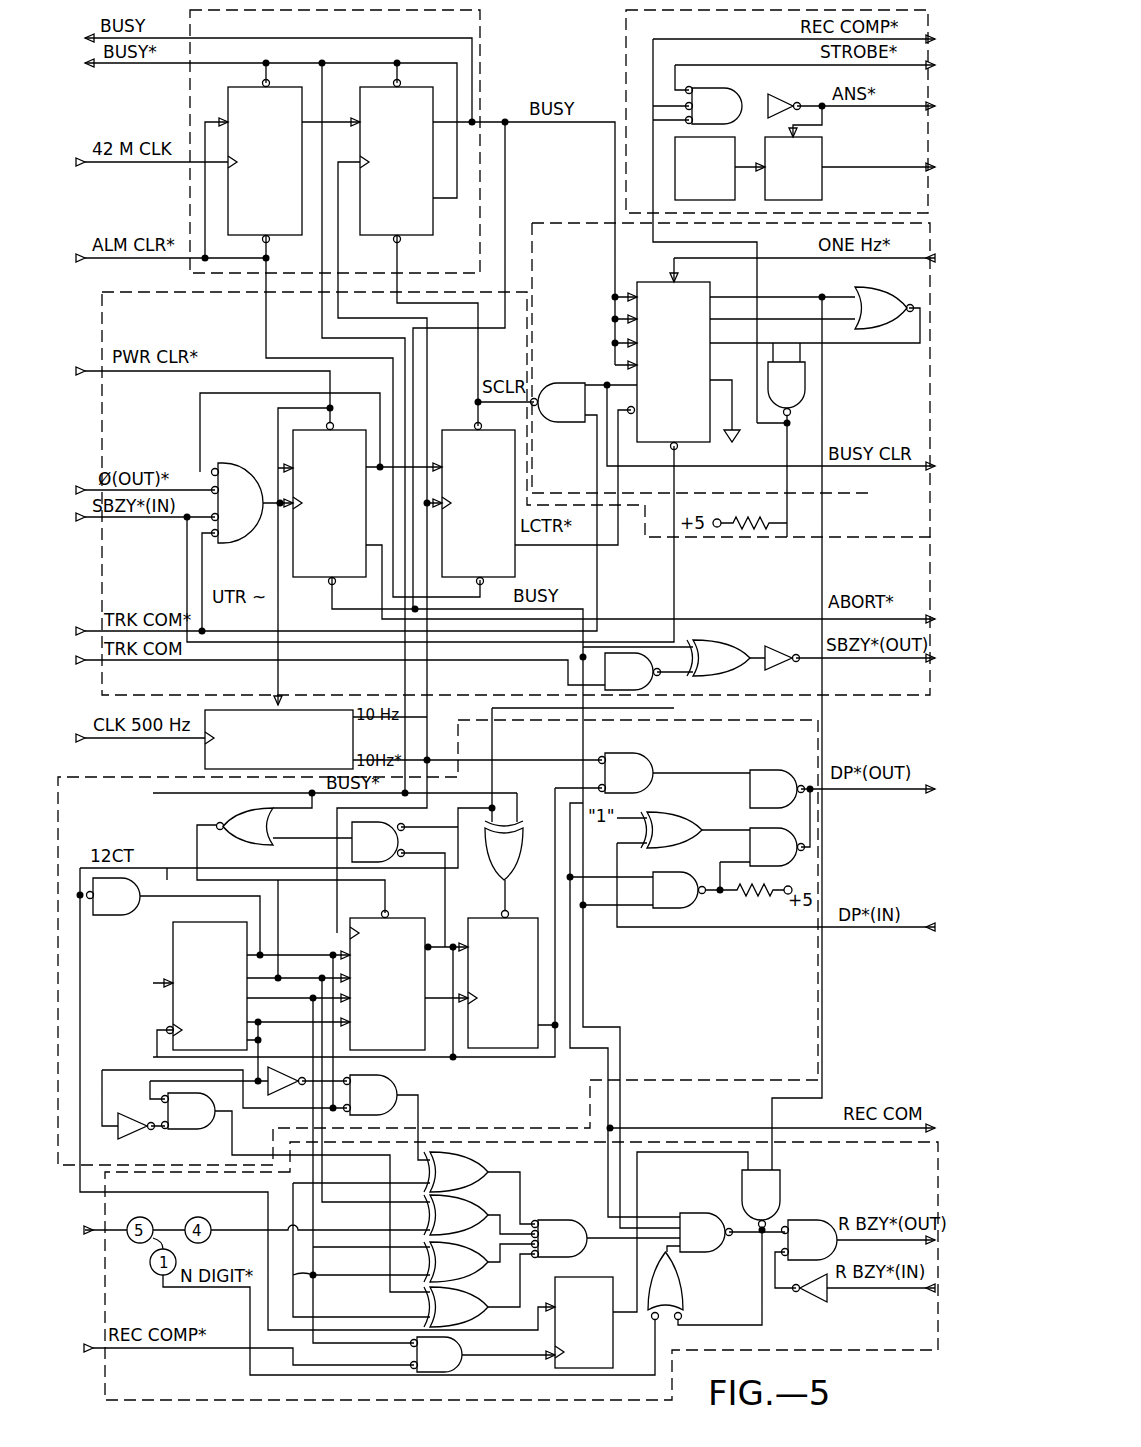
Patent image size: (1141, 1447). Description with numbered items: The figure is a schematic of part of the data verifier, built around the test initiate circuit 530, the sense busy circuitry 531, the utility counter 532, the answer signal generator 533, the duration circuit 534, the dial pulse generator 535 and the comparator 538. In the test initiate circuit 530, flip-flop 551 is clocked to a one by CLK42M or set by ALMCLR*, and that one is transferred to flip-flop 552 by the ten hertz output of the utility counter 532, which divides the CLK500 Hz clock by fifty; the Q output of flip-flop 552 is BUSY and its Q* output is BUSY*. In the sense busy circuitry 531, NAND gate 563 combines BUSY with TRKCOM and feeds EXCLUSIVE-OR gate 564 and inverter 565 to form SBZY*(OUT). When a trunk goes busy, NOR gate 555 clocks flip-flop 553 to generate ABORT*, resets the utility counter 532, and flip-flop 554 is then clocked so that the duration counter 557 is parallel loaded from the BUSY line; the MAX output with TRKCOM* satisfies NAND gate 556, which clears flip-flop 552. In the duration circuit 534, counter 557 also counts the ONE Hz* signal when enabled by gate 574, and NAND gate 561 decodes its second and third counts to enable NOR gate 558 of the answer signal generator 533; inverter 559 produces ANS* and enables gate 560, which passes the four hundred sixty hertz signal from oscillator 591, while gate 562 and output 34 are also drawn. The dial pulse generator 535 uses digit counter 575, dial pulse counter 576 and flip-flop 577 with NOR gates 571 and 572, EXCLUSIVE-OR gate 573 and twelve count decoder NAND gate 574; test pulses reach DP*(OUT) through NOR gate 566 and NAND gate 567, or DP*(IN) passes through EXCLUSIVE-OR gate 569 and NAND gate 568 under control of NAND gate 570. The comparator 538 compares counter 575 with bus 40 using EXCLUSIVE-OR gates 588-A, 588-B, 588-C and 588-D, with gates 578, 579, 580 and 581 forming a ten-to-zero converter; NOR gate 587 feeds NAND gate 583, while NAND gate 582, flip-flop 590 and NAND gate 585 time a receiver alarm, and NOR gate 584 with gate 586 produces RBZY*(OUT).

The test initiate circuit 530 is at (481, 18).
The sense busy circuitry 531 is at (104, 290).
The utility counter 532 is at (205, 750).
The answer signal generator 533 is at (626, 50).
The duration circuit 534 is at (874, 499).
The dial pulse generator 535 is at (730, 1082).
The comparator 538 is at (868, 1352).
The D-type flip-flop 551 is at (231, 100).
The D-type flip-flop 552 is at (373, 100).
The D-type flip-flop 553 is at (320, 432).
The flip-flop 554 is at (448, 437).
The NOR gate 555 is at (252, 488).
The NAND gate 556 is at (568, 405).
The duration counter 557 is at (660, 284).
The NOR gate 558 is at (700, 102).
The inverter 559 is at (778, 104).
The gate 560 is at (822, 182).
The NAND gate 561 is at (782, 303).
The NOR gate 562 is at (860, 302).
The NAND gate 563 is at (642, 687).
The EXCLUSIVE-OR gate 564 is at (719, 656).
The inverter 565 is at (784, 656).
The NOR gate 566 is at (630, 774).
The NAND gate 567 is at (766, 792).
The NAND gate 568 is at (752, 850).
The EXCLUSIVE-OR gate 569 is at (665, 848).
The NAND gate 570 is at (696, 892).
The NOR gate 571 is at (246, 850).
The NOR gate 572 is at (396, 841).
The EXCLUSIVE-OR gate 573 is at (510, 867).
The NAND gate 574 is at (128, 916).
The digit counter 575 is at (173, 1007).
The dial pulse counter 576 is at (390, 918).
The D-type flip-flop 577 is at (493, 916).
The gate 578 is at (136, 1116).
The gate 579 is at (202, 1128).
The gate 580 is at (277, 1094).
The gate 581 is at (390, 1098).
The NAND gate 582 is at (776, 1196).
The NAND gate 583 is at (716, 1220).
The NOR gate 584 is at (800, 1232).
The NAND gate 585 is at (680, 1284).
The gate 586 is at (818, 1306).
The NOR gate 587 is at (547, 1222).
The EXCLUSIVE-OR gate 588-A is at (482, 1152).
The EXCLUSIVE-OR gate 588-B is at (466, 1200).
The EXCLUSIVE-OR gate 588-C is at (466, 1284).
The EXCLUSIVE-OR gate 588-D is at (474, 1318).
The D-type flip-flop 590 is at (583, 1284).
The oscillator 591 is at (721, 140).
The output line 34 is at (885, 165).
The receiver bus 40 is at (96, 1234).